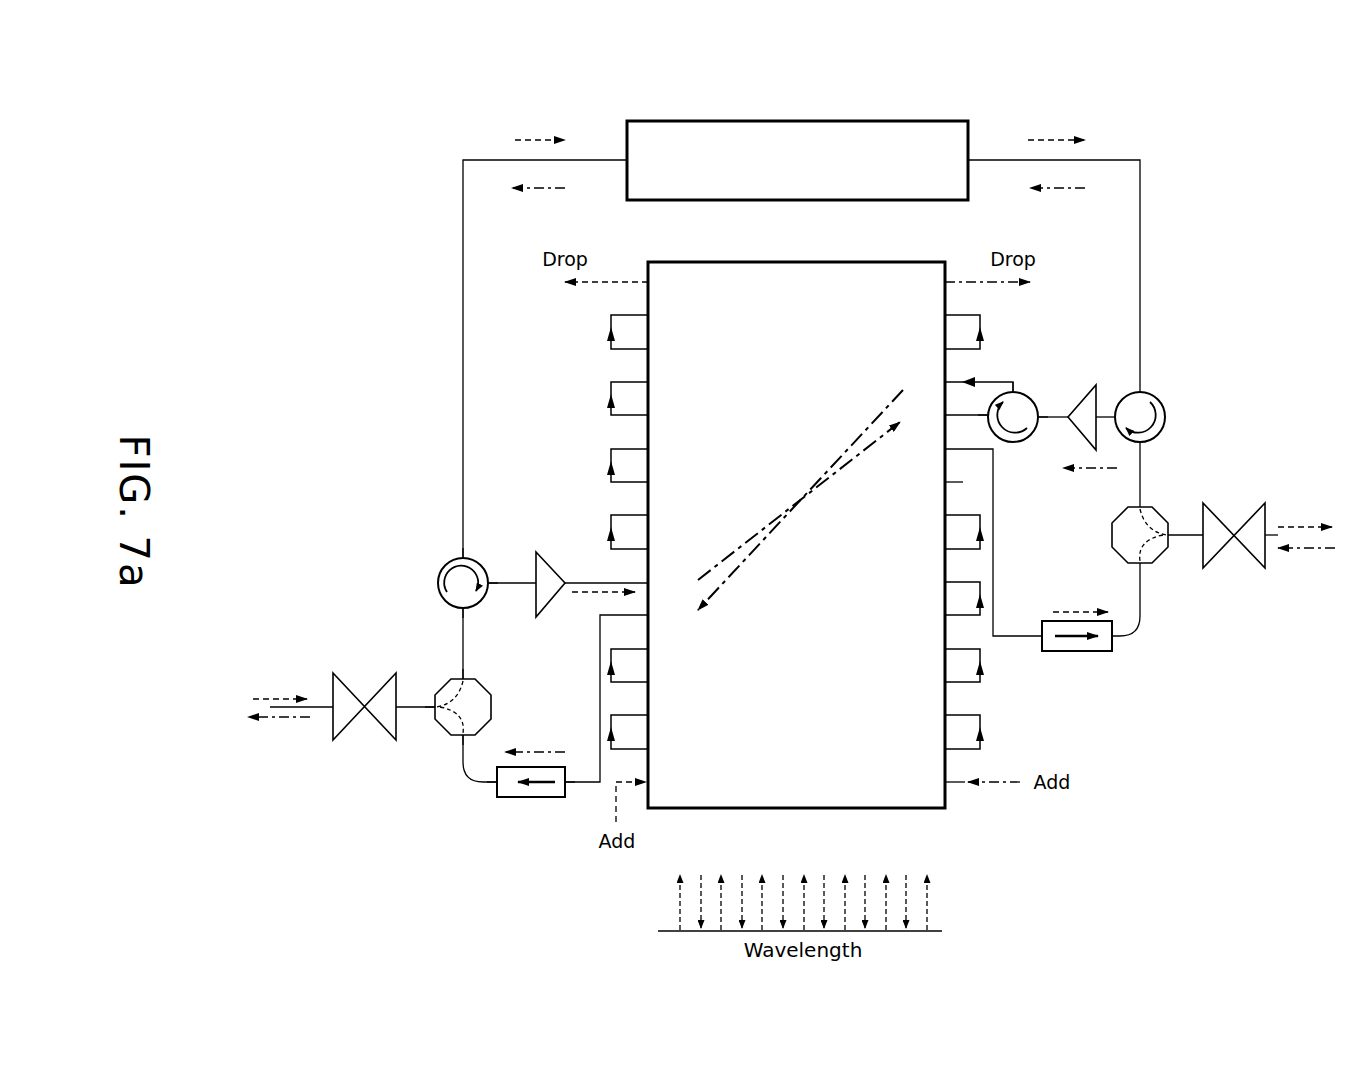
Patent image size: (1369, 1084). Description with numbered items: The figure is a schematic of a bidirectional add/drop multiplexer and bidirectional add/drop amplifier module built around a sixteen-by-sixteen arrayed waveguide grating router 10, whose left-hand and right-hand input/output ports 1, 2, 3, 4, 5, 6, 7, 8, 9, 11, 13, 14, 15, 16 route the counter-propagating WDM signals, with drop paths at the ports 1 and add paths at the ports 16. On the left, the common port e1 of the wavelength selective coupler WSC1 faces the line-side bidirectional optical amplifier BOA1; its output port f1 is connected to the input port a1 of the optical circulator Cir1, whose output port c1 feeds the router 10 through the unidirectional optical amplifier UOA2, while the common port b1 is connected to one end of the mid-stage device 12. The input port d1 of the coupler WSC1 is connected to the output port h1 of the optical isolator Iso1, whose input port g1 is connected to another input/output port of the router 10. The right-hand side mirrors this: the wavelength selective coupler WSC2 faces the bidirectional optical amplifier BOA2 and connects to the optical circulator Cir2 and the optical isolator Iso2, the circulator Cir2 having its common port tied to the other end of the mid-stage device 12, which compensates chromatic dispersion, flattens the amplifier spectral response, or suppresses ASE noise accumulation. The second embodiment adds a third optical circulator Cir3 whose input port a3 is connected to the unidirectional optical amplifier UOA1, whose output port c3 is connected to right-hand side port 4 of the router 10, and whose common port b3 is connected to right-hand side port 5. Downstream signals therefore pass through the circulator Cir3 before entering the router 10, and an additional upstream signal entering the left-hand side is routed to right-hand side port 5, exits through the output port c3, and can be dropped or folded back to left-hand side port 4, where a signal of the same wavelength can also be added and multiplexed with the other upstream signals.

The arrayed waveguide grating router 10 is at (796, 508).
The mid-stage device 12 is at (850, 121).
The optical circulator Cir1 is at (439, 583).
The optical circulator Cir2 is at (1162, 417).
The optical circulator Cir3 is at (1013, 431).
The unidirectional optical amplifier UOA1 is at (1077, 406).
The unidirectional optical amplifier UOA2 is at (568, 573).
The bidirectional optical amplifier BOA1 is at (352, 719).
The bidirectional optical amplifier BOA2 is at (1223, 549).
The wavelength selective coupler WSC1 is at (453, 719).
The wavelength selective coupler WSC2 is at (1112, 535).
The optical isolator Iso1 is at (531, 794).
The optical isolator Iso2 is at (1077, 649).
The input port a1 is at (452, 621).
The common port b1 is at (452, 547).
The output port c1 is at (499, 596).
The input port d1 is at (475, 744).
The common port e1 is at (424, 695).
The output port f1 is at (475, 667).
The input port g1 is at (578, 793).
The output port h1 is at (485, 793).
The input port a3 is at (1050, 406).
The common port b3 is at (973, 427).
The output port c3 is at (1008, 373).
The input/output port 1 is at (797, 281).
The input/output port 2 is at (797, 314).
The input/output port 3 is at (797, 348).
The input/output port 4 is at (797, 381).
The input/output port 5 is at (797, 414).
The input/output port 6 is at (797, 448).
The input/output port 7 is at (797, 481).
The input/output port 8 is at (797, 514).
The input/output port 9 is at (797, 548).
The input/output port 11 is at (798, 614).
The input/output port 13 is at (798, 681).
The input/output port 14 is at (798, 714).
The input/output port 15 is at (798, 748).
The input/output port 16 is at (798, 781).